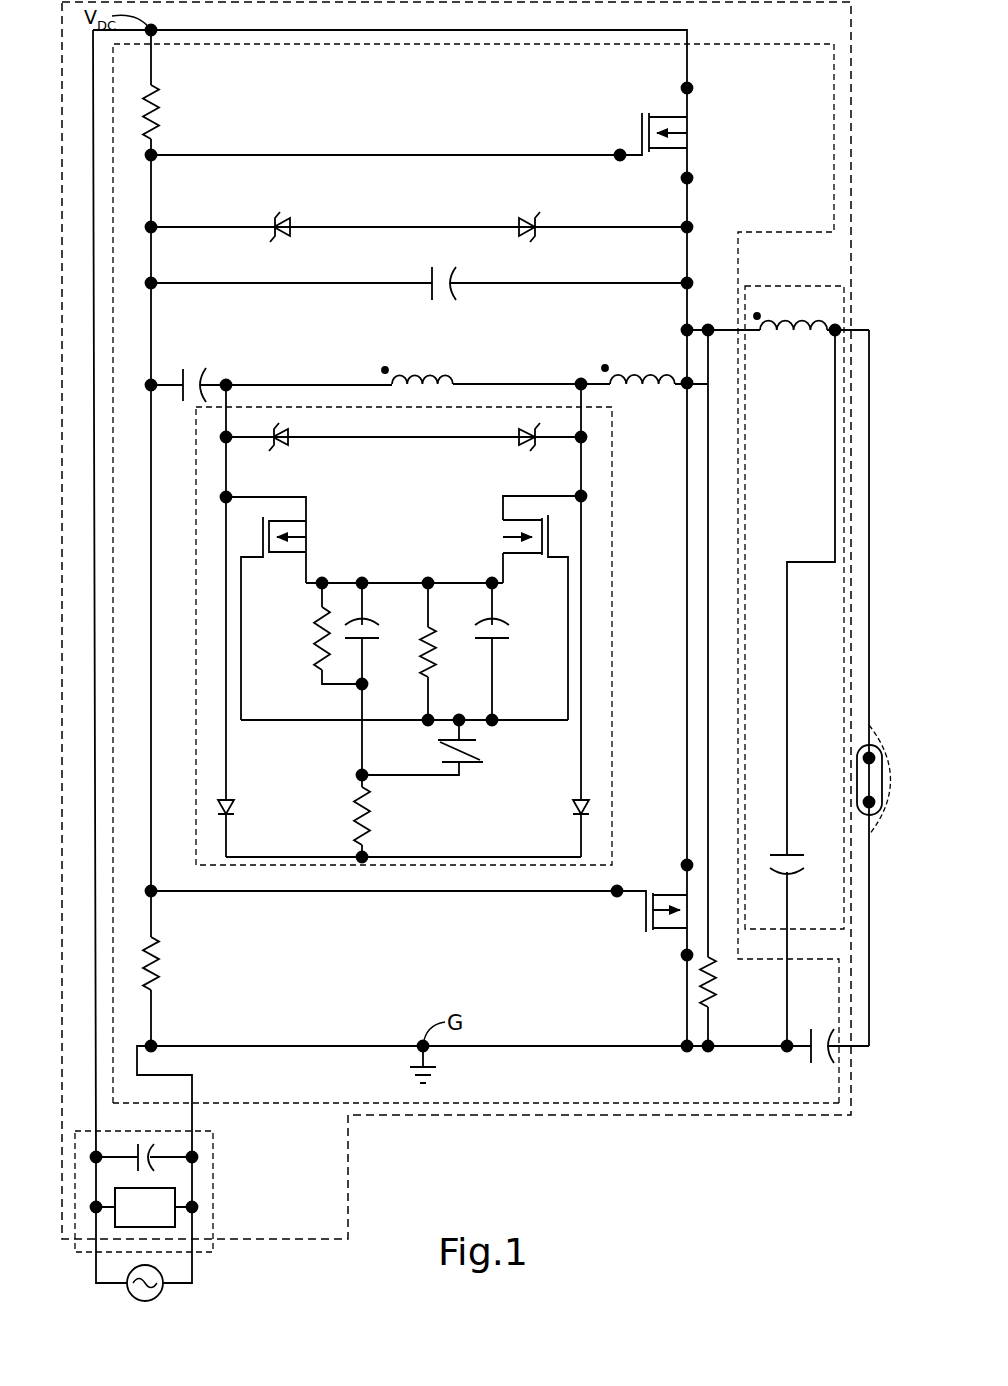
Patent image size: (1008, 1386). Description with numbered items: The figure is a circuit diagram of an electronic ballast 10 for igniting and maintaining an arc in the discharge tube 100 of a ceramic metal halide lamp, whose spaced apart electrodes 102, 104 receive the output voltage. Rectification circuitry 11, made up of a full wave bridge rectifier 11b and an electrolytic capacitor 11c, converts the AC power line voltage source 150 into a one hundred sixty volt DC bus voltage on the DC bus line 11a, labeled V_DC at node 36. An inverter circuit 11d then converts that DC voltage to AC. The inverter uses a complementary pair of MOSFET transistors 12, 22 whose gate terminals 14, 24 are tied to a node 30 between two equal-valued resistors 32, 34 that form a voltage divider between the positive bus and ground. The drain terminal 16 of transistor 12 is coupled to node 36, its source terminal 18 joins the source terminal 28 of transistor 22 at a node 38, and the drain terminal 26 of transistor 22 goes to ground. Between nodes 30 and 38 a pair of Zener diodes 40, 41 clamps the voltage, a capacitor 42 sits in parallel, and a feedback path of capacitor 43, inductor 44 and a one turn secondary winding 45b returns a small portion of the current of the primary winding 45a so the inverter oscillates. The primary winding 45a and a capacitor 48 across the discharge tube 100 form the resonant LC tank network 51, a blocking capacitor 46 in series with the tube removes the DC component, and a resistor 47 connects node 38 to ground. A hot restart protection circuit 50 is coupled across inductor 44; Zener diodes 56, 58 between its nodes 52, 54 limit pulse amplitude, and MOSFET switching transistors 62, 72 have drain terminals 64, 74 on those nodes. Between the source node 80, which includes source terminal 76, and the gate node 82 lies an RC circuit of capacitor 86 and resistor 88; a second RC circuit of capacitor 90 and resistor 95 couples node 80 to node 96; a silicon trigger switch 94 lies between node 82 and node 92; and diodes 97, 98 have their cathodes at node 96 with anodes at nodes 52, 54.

The electronic ballast 10 is at (851, 155).
The rectification circuitry 11 is at (215, 1132).
The DC bus line 11a is at (360, 30).
The full wave bridge rectifier 11b is at (176, 1198).
The electrolytic capacitor 11c is at (156, 1150).
The inverter circuit 11d is at (398, 1104).
The MOSFET transistor 12 is at (647, 108).
The gate terminal 14 is at (624, 150).
The drain terminal 16 is at (690, 90).
The source terminal 18 is at (688, 176).
The MOSFET transistor 22 is at (668, 940).
The gate terminal 24 is at (630, 896).
The drain terminal 26 is at (687, 960).
The source terminal 28 is at (687, 865).
The node 30 is at (151, 155).
The resistor 32 is at (157, 93).
The resistor 34 is at (160, 950).
The node 36 is at (151, 30).
The node 38 is at (687, 227).
The Zener diode 40 is at (288, 220).
The Zener diode 41 is at (528, 218).
The capacitor 42 is at (432, 277).
The capacitor 43 is at (205, 375).
The inductor 44 is at (453, 380).
The primary winding 45a is at (800, 334).
The secondary winding 45b is at (672, 375).
The blocking capacitor 46 is at (811, 1038).
The resistor 47 is at (709, 957).
The capacitor 48 is at (790, 875).
The hot restart protection circuit 50 is at (612, 645).
The resonant LC tank network 51 is at (833, 284).
The node 52 is at (226, 385).
The node 54 is at (581, 384).
The Zener diode 56 is at (287, 446).
The Zener diode 58 is at (521, 446).
The MOSFET switching transistor 62 is at (318, 530).
The drain terminal 64 is at (300, 497).
The MOSFET switching transistor 72 is at (494, 528).
The drain terminal 74 is at (518, 494).
The source terminal 76 is at (520, 566).
The node 80 is at (362, 583).
The node 82 is at (428, 718).
The capacitor 86 is at (495, 618).
The resistor 88 is at (438, 640).
The capacitor 90 is at (366, 618).
The node 92 is at (362, 775).
The silicon trigger switch 94 is at (322, 665).
The resistor 95 is at (356, 815).
The node 96 is at (366, 855).
The diode 97 is at (234, 806).
The diode 98 is at (574, 808).
The discharge tube 100 is at (857, 790).
The electrode 102 is at (875, 758).
The electrode 104 is at (875, 804).
The AC power line voltage source 150 is at (160, 1292).